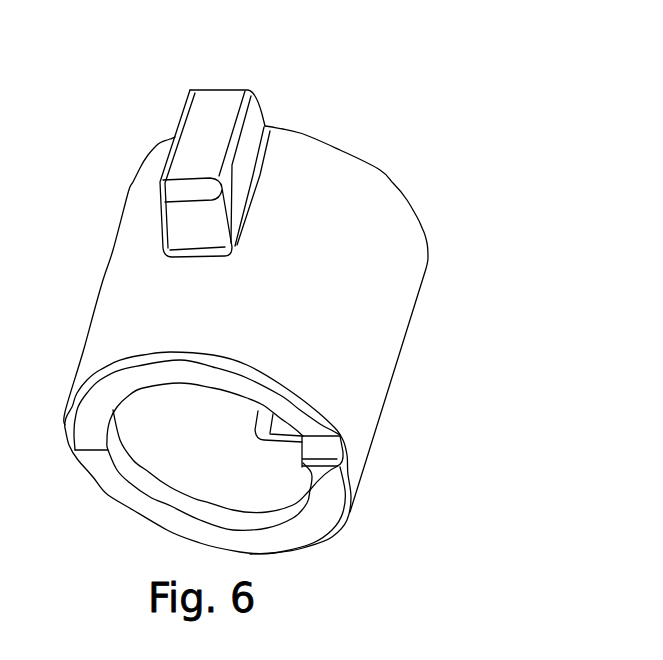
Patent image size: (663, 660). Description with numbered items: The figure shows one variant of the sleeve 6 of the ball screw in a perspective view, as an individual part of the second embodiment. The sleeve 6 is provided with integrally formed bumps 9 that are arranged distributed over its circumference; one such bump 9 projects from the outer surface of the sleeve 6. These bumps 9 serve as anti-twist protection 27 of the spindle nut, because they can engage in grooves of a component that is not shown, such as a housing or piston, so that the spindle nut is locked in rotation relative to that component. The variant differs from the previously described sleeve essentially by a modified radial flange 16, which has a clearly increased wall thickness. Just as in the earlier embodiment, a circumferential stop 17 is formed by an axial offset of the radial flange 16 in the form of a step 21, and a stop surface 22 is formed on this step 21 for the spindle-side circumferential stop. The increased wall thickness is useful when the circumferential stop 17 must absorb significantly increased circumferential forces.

The sleeve 6 is at (380, 314).
The bumps 9 is at (226, 137).
The anti-twist protection 27 is at (207, 118).
The radial flange 16 is at (293, 410).
The circumferential stop 17 is at (397, 448).
The step 21 is at (397, 448).
The stop surface 22 is at (318, 452).